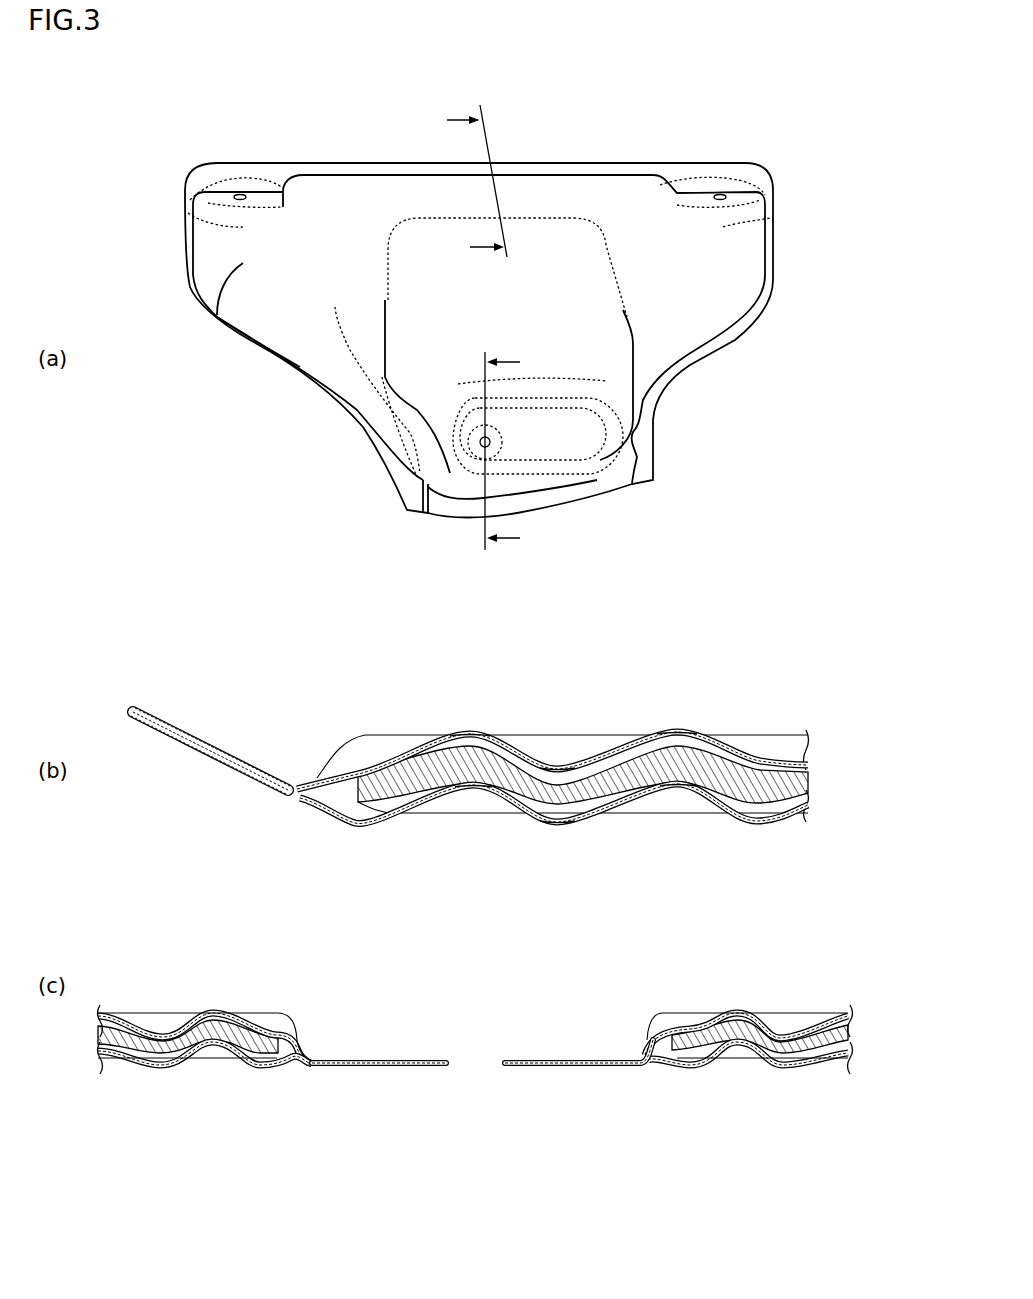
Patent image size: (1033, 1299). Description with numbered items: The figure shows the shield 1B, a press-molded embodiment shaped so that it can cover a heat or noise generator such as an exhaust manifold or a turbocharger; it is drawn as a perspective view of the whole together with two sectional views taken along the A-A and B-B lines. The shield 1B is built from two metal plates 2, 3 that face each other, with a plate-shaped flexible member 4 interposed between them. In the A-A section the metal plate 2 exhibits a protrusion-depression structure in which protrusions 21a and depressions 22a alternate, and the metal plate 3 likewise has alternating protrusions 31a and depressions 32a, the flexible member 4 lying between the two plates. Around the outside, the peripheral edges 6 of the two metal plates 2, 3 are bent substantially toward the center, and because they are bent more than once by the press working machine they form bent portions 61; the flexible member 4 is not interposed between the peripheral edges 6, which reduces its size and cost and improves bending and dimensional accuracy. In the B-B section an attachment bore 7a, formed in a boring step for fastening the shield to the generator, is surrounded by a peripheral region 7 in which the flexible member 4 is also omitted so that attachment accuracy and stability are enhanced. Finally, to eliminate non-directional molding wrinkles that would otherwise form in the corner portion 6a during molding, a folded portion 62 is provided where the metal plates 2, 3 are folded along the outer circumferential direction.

The shield 1B is at (720, 132).
The metal plate 2 is at (733, 257).
The metal plate 3 is at (757, 824).
The flexible member 4 is at (813, 768).
The peripheral edges 6 is at (556, 163).
The bent portions 61 is at (222, 752).
The folded portion 62 is at (223, 280).
The corner portion 6a is at (215, 317).
The peripheral region 7 is at (512, 453).
The attachment bore 7a is at (483, 447).
The protrusions 21a is at (470, 731).
The depressions 22a is at (557, 766).
The protrusions 31a is at (557, 824).
The depressions 32a is at (472, 790).